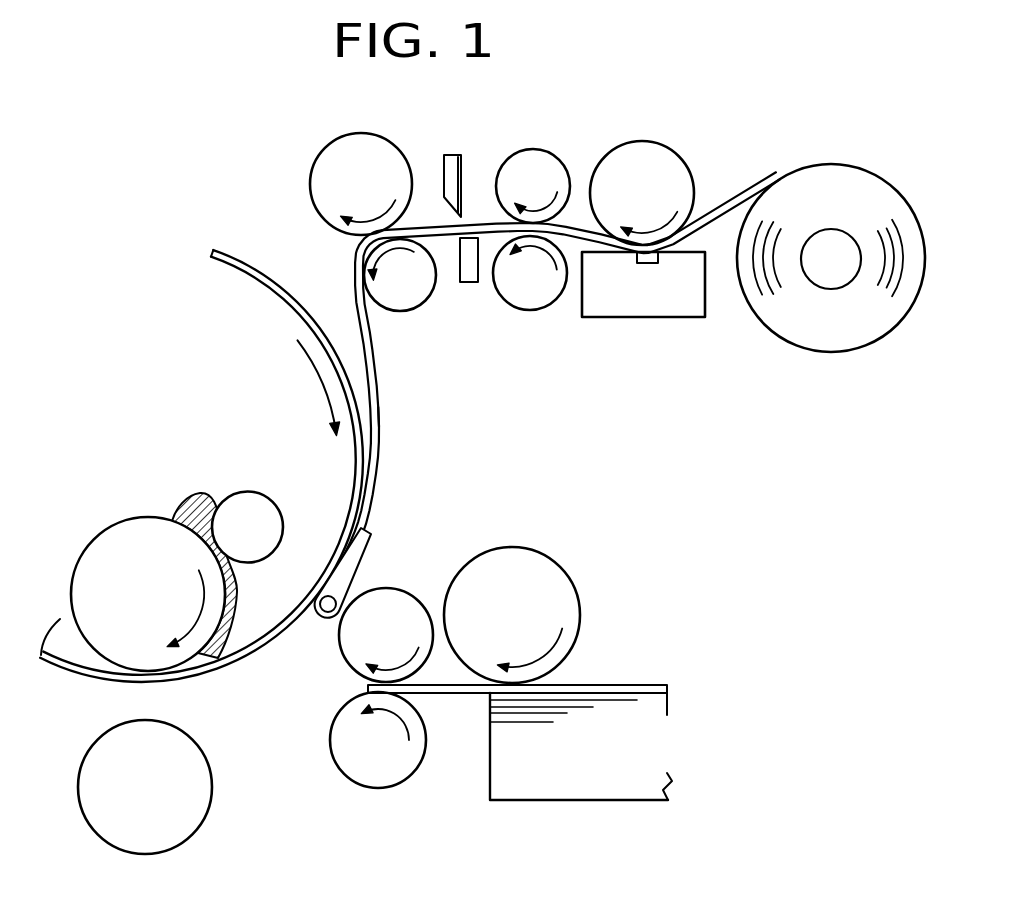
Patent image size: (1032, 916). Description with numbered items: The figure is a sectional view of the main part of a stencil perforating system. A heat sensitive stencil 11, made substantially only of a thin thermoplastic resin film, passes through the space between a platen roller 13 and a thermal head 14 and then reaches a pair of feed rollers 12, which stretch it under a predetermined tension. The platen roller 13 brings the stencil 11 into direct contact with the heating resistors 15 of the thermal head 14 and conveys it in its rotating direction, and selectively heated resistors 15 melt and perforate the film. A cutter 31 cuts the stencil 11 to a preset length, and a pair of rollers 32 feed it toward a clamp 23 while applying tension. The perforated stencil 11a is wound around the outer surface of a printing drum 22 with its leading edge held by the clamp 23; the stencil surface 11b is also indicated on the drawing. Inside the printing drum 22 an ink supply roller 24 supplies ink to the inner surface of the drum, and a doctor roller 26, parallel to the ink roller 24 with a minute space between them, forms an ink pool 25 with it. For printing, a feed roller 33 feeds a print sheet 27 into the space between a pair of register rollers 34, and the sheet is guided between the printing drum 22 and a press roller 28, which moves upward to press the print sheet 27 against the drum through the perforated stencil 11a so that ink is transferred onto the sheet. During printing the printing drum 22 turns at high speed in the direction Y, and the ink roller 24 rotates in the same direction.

The heat sensitive stencil 11 is at (860, 172).
The perforated stencil 11a is at (368, 383).
The tape surface 11b is at (377, 440).
The feed rollers 12 is at (545, 150).
The platen roller 13 is at (676, 160).
The thermal head 14 is at (660, 312).
The heating resistors 15 is at (643, 264).
The printing drum 22 is at (250, 257).
The clamp 23 is at (372, 552).
The ink supply roller 24 is at (136, 520).
The ink pool 25 is at (200, 495).
The doctor roller 26 is at (272, 495).
The print sheet 27 is at (452, 695).
The press roller 28 is at (190, 822).
The cutter 31 is at (452, 157).
The rollers 32 is at (380, 142).
The feed roller 33 is at (570, 590).
The register rollers 34 is at (400, 592).
The direction Y is at (316, 373).